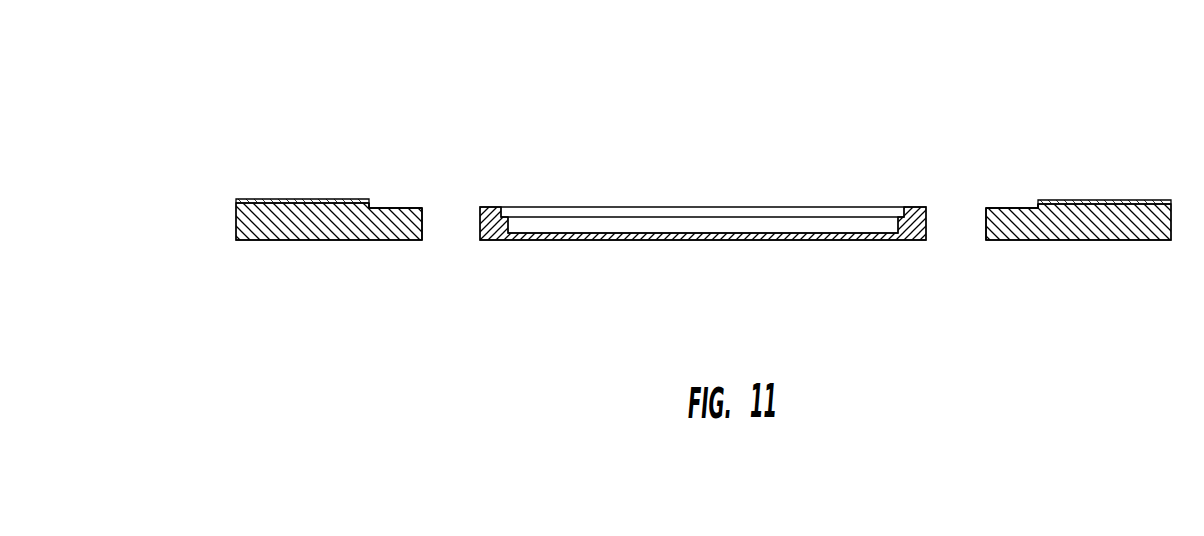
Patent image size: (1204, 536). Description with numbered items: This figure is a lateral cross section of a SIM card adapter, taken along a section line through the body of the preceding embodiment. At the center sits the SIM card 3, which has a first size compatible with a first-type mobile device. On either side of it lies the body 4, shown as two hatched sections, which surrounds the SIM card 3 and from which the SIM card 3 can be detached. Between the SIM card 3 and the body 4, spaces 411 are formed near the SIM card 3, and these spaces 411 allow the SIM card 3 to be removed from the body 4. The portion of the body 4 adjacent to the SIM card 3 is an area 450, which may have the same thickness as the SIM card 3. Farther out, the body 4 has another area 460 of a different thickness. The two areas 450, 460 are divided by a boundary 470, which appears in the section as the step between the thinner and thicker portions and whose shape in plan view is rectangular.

The SIM card 3 is at (652, 190).
The body 4 is at (1119, 361).
The spaces 411 is at (448, 230).
The area 450 is at (405, 207).
The other area 460 is at (291, 198).
The boundary 470 is at (369, 205).